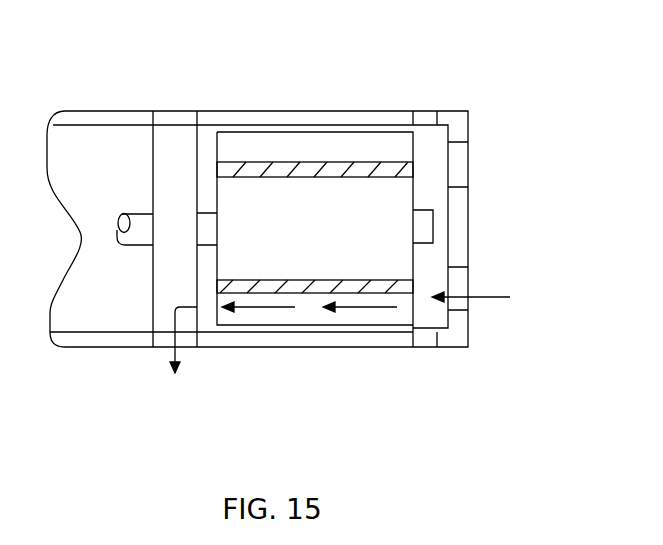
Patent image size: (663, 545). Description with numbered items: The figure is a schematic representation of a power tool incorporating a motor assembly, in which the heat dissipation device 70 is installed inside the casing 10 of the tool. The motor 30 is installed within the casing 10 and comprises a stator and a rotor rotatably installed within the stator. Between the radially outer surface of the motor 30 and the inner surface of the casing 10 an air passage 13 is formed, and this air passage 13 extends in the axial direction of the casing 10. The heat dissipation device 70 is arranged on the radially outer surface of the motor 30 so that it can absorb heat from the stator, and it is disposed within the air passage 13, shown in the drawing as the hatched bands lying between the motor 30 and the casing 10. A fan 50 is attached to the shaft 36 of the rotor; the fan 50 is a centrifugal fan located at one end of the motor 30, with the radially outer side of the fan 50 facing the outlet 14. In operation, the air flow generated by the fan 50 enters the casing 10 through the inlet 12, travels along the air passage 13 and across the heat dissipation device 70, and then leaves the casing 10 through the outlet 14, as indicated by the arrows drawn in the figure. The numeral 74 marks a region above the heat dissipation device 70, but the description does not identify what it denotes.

The casing 10 is at (378, 337).
The inlet 12 is at (424, 112).
The air passage 13 is at (342, 126).
The outlet 14 is at (176, 118).
The motor 30 is at (322, 237).
The shaft 36 is at (139, 232).
The fan 50 is at (168, 295).
The heat dissipation device 70 is at (253, 168).
The cavity 74 is at (302, 147).